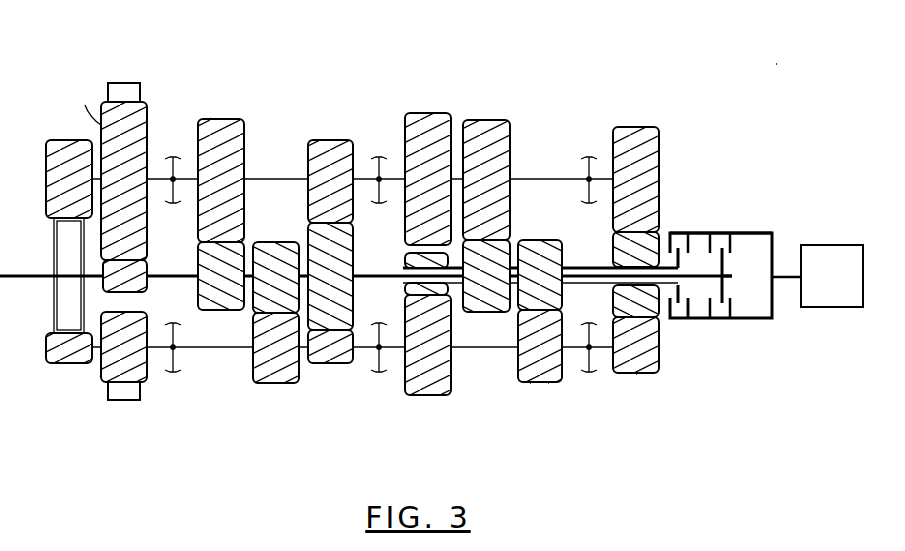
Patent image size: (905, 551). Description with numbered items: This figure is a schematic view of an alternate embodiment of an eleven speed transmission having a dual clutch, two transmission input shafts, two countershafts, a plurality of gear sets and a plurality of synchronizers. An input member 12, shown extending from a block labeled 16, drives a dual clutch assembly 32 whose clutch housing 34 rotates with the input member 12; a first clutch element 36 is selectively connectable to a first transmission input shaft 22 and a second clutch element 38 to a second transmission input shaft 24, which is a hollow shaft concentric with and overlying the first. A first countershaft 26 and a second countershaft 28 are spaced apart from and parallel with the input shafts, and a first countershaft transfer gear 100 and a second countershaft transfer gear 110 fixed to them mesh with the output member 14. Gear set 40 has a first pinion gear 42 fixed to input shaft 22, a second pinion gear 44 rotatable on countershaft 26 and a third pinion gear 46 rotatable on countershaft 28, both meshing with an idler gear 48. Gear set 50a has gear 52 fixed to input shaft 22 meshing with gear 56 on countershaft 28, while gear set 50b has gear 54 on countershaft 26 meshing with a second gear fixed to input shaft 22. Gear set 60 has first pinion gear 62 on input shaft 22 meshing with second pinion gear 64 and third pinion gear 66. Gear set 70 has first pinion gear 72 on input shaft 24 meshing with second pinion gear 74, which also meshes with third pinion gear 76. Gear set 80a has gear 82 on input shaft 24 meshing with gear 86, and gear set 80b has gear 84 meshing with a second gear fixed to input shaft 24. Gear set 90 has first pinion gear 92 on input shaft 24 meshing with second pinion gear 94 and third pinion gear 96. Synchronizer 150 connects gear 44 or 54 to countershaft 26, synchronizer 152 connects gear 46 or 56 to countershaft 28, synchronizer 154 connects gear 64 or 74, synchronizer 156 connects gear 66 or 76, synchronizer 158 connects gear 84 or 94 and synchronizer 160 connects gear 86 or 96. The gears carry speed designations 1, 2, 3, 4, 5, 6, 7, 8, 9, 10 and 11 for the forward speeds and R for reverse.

The input member 12 is at (785, 280).
The output member 14 is at (366, 275).
The final drive / differential 16 is at (832, 276).
The first transmission input shaft 22 is at (728, 276).
The second transmission input shaft 24 is at (600, 262).
The first countershaft 26 is at (232, 348).
The second countershaft 28 is at (546, 178).
The dual clutch assembly 32 is at (753, 221).
The clutch housing 34 is at (707, 232).
The first clutch element 36 is at (733, 305).
The second clutch element 38 is at (690, 305).
The co-planar gear set 40 is at (122, 404).
The first pinion gear 42 is at (147, 285).
The second pinion gear 44 is at (100, 377).
The third pinion gear 46 is at (85, 105).
The idler gear 48 is at (122, 83).
The gear set 50a is at (209, 115).
The gear set 50b is at (262, 388).
The gear 52 is at (200, 248).
The gear 54 is at (285, 384).
The gear 56 is at (223, 119).
The co-planar gear set 60 is at (319, 136).
The first pinion gear 62 is at (330, 276).
The second pinion gear 64 is at (340, 364).
The third pinion gear 66 is at (337, 140).
The co-planar gear set 70 is at (418, 400).
The first pinion gear 72 is at (405, 258).
The second pinion gear 74 is at (437, 396).
The third pinion gear 76 is at (437, 113).
The gear set 80a is at (485, 116).
The gear set 80b is at (529, 389).
The gear 82 is at (492, 312).
The gear 84 is at (548, 384).
The gear 86 is at (497, 120).
The co-planar gear set 90 is at (637, 384).
The first pinion gear 92 is at (636, 274).
The second pinion gear 94 is at (659, 365).
The third pinion gear 96 is at (659, 155).
The first countershaft transfer gear 100 is at (69, 349).
The second countershaft transfer gear 110 is at (69, 179).
The synchronizer 150 is at (173, 372).
The synchronizer 152 is at (173, 157).
The synchronizer 154 is at (379, 323).
The synchronizer 156 is at (379, 157).
The synchronizer 158 is at (589, 372).
The synchronizer 160 is at (589, 157).
The first gear 1 is at (124, 181).
The second gear 2 is at (428, 345).
The third gear 3 is at (124, 347).
The fourth gear 4 is at (486, 180).
The fifth gear 5 is at (221, 180).
The sixth gear 6 is at (540, 346).
The seventh gear 7 is at (276, 348).
The eighth gear 8 is at (636, 179).
The ninth gear 9 is at (330, 181).
The multiple speed transmission 10 is at (636, 345).
The eleventh gear 11 is at (330, 347).
The reverse gear R is at (428, 179).